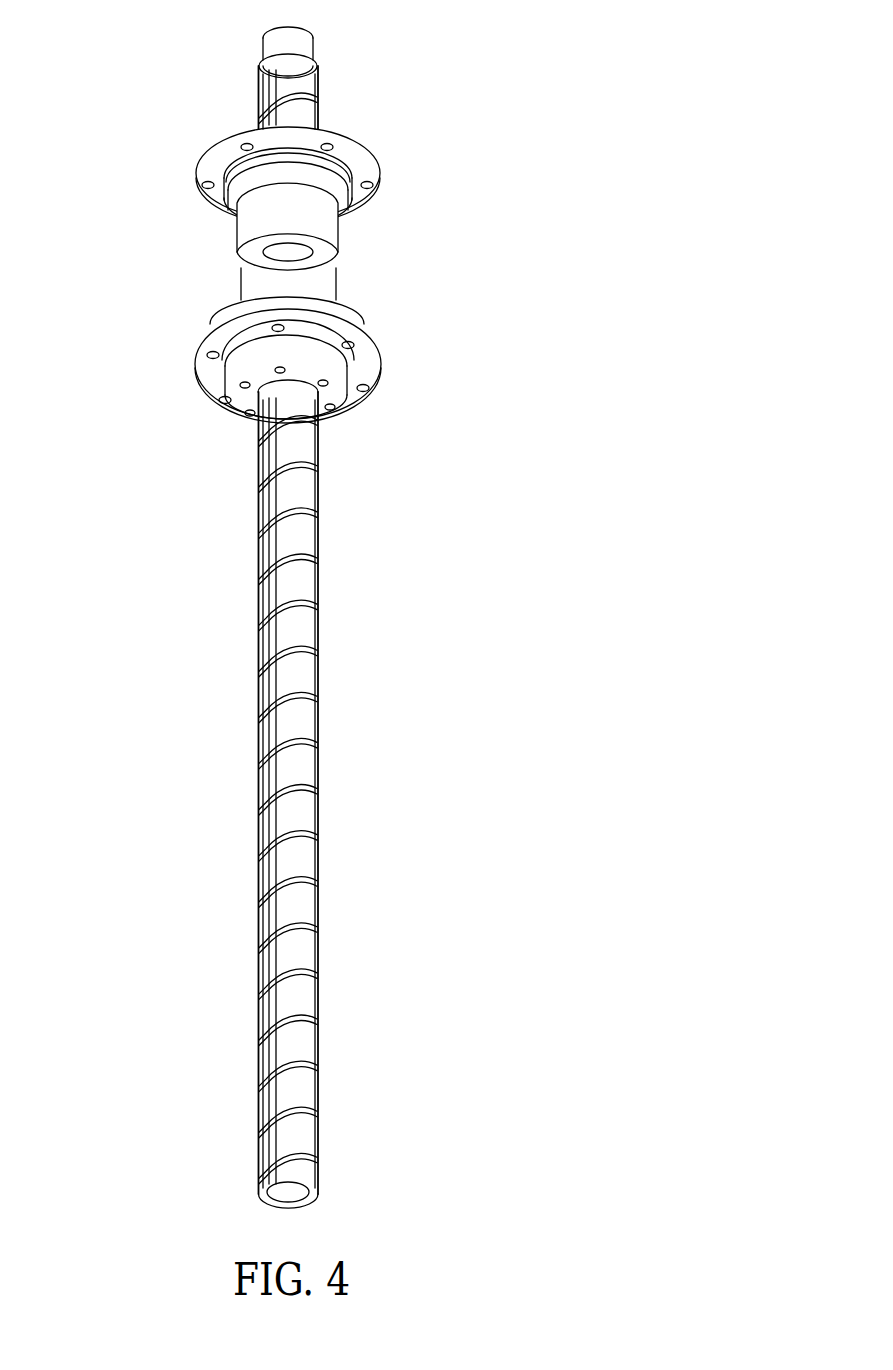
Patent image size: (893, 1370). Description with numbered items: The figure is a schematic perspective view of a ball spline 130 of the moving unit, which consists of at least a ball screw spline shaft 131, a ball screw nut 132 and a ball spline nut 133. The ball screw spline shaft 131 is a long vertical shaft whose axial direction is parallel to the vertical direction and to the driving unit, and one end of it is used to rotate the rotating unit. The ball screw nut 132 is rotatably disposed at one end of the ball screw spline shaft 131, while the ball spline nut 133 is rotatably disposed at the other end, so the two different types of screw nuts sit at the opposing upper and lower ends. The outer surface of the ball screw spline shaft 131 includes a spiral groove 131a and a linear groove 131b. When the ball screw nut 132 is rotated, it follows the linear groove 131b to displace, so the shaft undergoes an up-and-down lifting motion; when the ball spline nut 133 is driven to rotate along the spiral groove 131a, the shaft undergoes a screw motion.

The ball spline 130 is at (105, 38).
The ball screw spline shaft 131 is at (294, 617).
The spiral groove 131a is at (292, 1022).
The linear groove 131b is at (265, 1012).
The ball screw nut 132 is at (352, 163).
The ball spline nut 133 is at (362, 366).